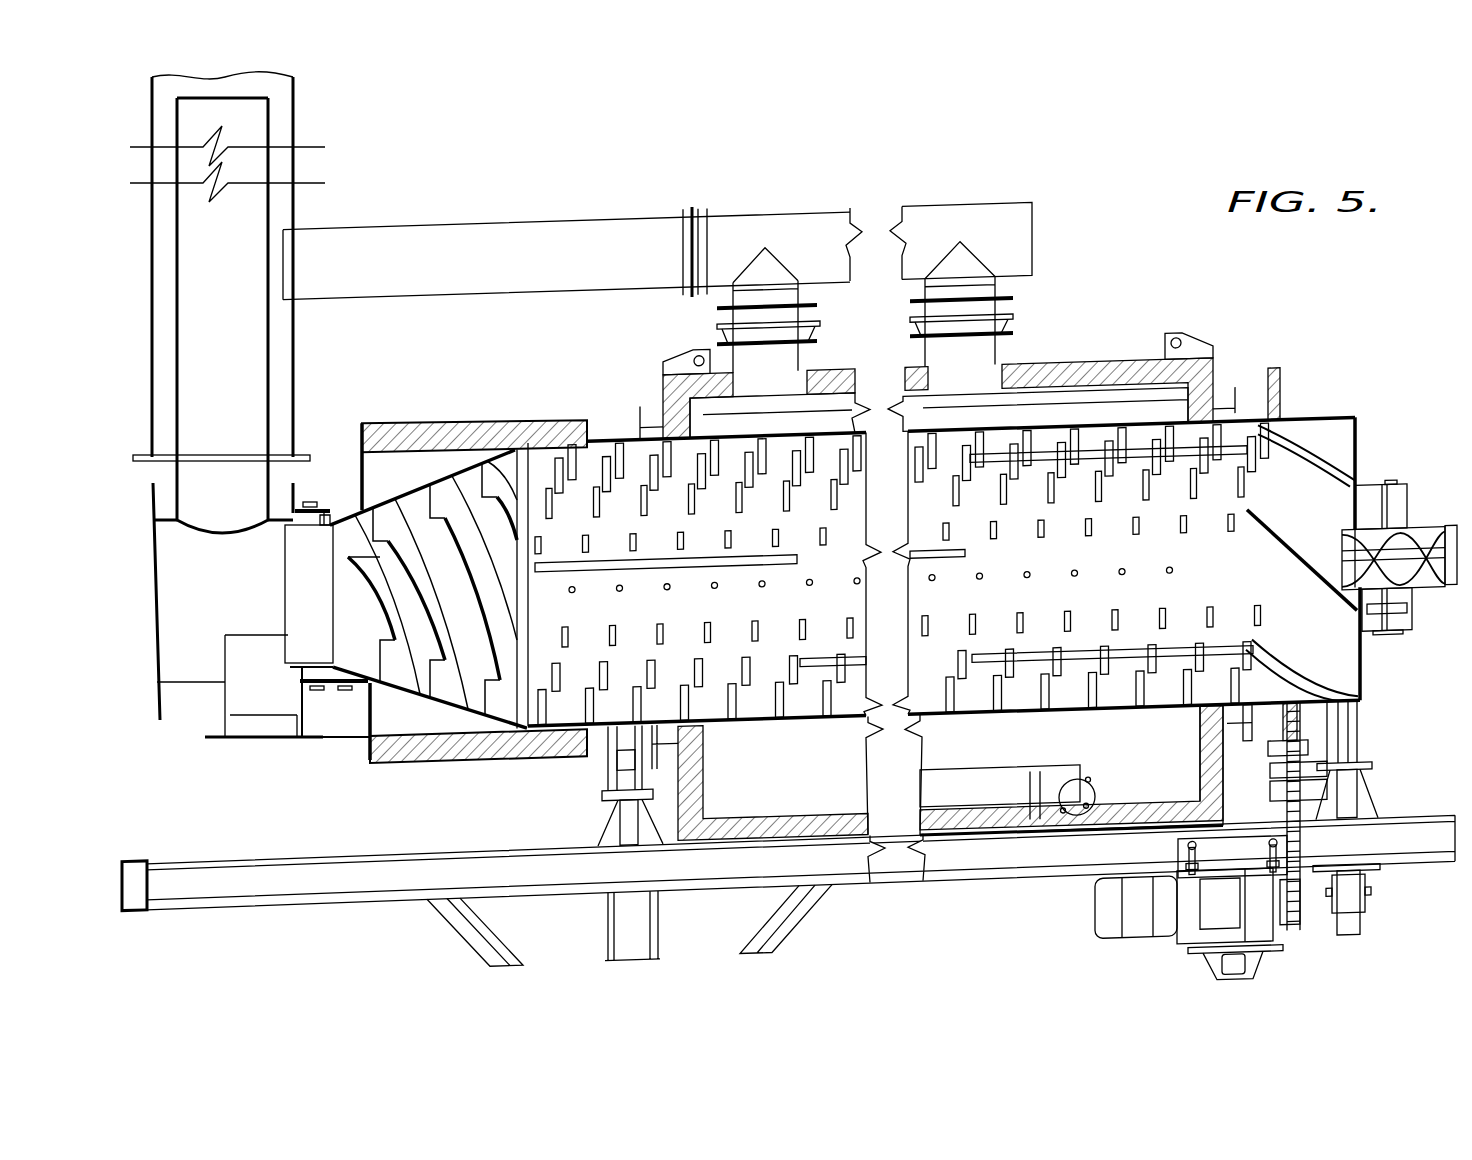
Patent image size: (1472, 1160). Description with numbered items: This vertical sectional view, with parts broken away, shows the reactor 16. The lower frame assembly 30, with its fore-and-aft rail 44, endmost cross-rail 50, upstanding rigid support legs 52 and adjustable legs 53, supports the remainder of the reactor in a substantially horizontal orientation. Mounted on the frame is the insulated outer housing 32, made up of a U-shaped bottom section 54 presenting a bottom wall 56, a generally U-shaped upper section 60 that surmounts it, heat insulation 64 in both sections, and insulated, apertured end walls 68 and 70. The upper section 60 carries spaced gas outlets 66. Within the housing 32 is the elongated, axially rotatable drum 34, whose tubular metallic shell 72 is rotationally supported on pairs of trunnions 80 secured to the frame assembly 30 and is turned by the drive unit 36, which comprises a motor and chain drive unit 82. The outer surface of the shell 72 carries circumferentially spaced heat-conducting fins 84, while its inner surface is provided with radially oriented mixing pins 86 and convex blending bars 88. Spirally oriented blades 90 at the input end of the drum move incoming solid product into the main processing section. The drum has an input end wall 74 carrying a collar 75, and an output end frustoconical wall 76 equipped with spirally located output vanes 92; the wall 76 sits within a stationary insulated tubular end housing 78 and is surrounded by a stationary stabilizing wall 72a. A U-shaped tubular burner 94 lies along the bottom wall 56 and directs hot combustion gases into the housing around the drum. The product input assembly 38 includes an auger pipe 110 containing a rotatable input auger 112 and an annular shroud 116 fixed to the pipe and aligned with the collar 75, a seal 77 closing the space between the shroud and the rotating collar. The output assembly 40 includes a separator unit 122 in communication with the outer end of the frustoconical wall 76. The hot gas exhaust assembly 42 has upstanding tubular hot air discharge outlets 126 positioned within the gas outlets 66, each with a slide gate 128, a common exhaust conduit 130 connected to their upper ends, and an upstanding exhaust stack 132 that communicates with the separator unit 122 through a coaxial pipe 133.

The reactor 16 is at (1143, 218).
The lower frame assembly 30 is at (290, 918).
The insulated outer housing 32 is at (1137, 325).
The drum 34 is at (1332, 400).
The drive unit 36 is at (1072, 921).
The product input assembly 38 is at (1425, 422).
The product output assembly 40 is at (178, 757).
The hot gas exhaust assembly 42 is at (555, 183).
The rail 44 is at (310, 870).
The endmost cross-rail 50 is at (147, 892).
The upstanding rigid support legs 52 is at (480, 945).
The adjustable legs 53 is at (1340, 920).
The U-shaped bottom section 54 is at (735, 848).
The bottom wall 56 is at (972, 840).
The upper section 60 is at (1097, 352).
The heat insulation 64 is at (1208, 370).
The gas outlets 66 is at (985, 378).
The end wall 68 is at (1228, 760).
The end wall 70 is at (690, 775).
The shell 72 is at (835, 722).
The stationary stabilizing wall 72a is at (348, 468).
The input end wall 74 is at (1355, 428).
The collar 75 is at (1365, 495).
The frustoconical wall 76 is at (450, 466).
The seal 77 is at (343, 700).
The tubular end housing 78 is at (440, 420).
The trunnions 80 is at (1350, 735).
The motor and chain drive unit 82 is at (1280, 372).
The heat-conducting fins 84 is at (918, 436).
The mixing pins 86 is at (1170, 572).
The blending bars 88 is at (797, 560).
The spirally oriented blades 90 is at (1282, 668).
The output vanes 92 is at (350, 598).
The tubular burner 94 is at (975, 768).
The auger pipe 110 is at (1432, 530).
The input auger 112 is at (1412, 582).
The annular shroud 116 is at (1405, 497).
The separator unit 122 is at (175, 633).
The hot air discharge outlets 126 is at (928, 360).
The slide gate 128 is at (1005, 318).
The exhaust conduit 130 is at (752, 212).
The exhaust stack 132 is at (296, 115).
The coaxial pipe 133 is at (200, 289).